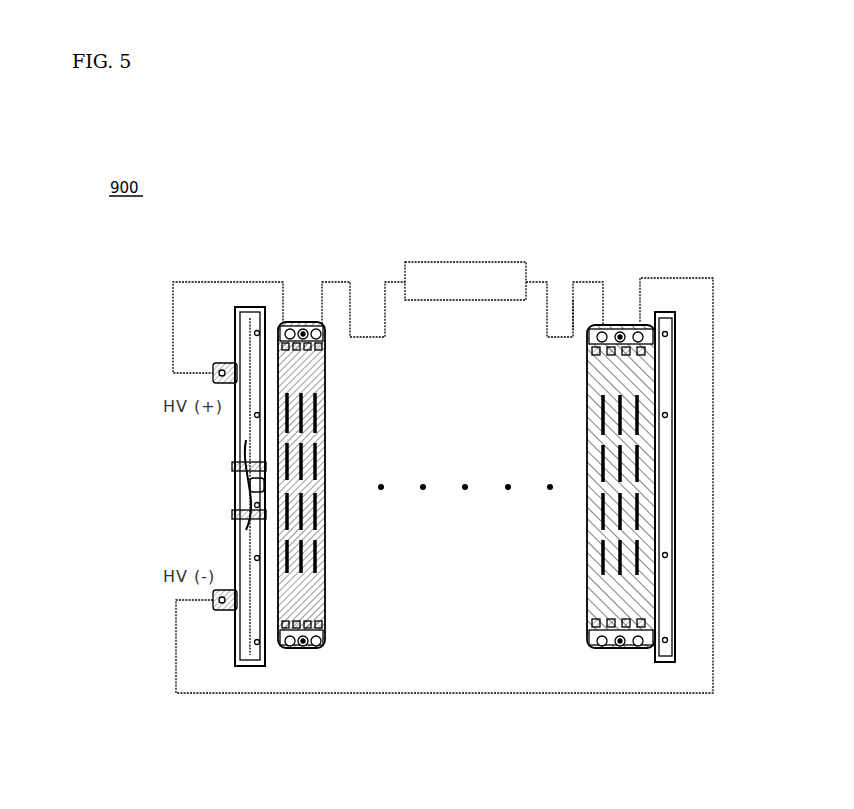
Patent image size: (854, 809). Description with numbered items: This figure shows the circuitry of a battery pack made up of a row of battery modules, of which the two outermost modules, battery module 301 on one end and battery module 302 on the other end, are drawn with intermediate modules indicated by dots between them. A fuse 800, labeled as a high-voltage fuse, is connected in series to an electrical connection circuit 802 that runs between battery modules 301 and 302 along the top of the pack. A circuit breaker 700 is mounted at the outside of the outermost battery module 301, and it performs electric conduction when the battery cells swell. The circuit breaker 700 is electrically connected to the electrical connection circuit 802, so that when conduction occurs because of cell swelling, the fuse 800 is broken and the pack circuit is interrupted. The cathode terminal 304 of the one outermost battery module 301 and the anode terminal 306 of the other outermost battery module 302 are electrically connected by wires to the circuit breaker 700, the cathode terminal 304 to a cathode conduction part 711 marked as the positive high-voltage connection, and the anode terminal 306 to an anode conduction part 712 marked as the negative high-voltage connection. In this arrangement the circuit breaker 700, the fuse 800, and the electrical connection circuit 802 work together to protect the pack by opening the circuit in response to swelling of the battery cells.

The fuse 800 is at (497, 258).
The electrical connection circuit 802 is at (587, 274).
The cathode terminal 304 is at (284, 326).
The anode terminal 306 is at (664, 314).
The cathode conduction part 711 is at (215, 365).
The anode conduction part 712 is at (215, 600).
The circuit breaker 700 is at (225, 485).
The battery module 301 is at (335, 640).
The battery module 302 is at (632, 650).